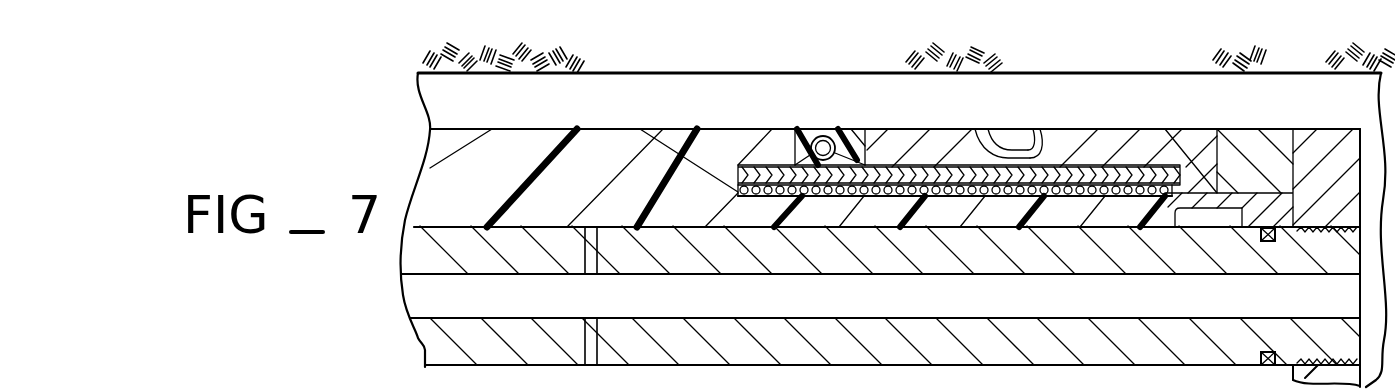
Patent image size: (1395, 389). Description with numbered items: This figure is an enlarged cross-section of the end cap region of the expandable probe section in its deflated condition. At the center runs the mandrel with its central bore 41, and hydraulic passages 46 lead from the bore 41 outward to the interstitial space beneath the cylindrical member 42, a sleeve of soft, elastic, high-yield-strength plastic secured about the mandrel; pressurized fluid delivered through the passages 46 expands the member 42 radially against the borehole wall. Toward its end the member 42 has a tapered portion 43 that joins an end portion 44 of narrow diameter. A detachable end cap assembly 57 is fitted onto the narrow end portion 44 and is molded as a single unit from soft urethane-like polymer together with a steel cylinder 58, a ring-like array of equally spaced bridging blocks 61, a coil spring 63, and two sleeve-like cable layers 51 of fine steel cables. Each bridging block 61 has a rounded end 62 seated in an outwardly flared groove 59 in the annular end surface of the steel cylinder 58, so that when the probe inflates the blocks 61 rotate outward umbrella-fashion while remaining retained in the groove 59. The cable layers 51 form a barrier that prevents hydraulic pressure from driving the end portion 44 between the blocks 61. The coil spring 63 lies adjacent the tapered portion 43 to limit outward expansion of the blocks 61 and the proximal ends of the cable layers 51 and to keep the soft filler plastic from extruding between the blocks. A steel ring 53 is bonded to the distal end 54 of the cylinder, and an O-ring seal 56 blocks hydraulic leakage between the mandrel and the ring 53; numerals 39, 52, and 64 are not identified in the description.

The lower plate 39 is at (447, 350).
The central bore 41 is at (440, 295).
The cylindrical member 42 is at (450, 170).
The tapered portions 43 is at (660, 142).
The end portions 44 is at (1055, 212).
The hydraulic passages 46 is at (590, 257).
The cable layers 51 is at (1112, 170).
The gasket 52 is at (1132, 187).
The steel ring 53 is at (1248, 212).
The distal end 54 is at (1210, 200).
The O-ring seal 56 is at (1270, 240).
The end cap assembly 57 is at (1270, 150).
The steel cylinder 58 is at (1075, 147).
The groove 59 is at (1032, 147).
The bridging blocks 61 is at (908, 145).
The rounded end 62 is at (987, 140).
The coil spring 63 is at (822, 137).
The collar 64 is at (735, 143).